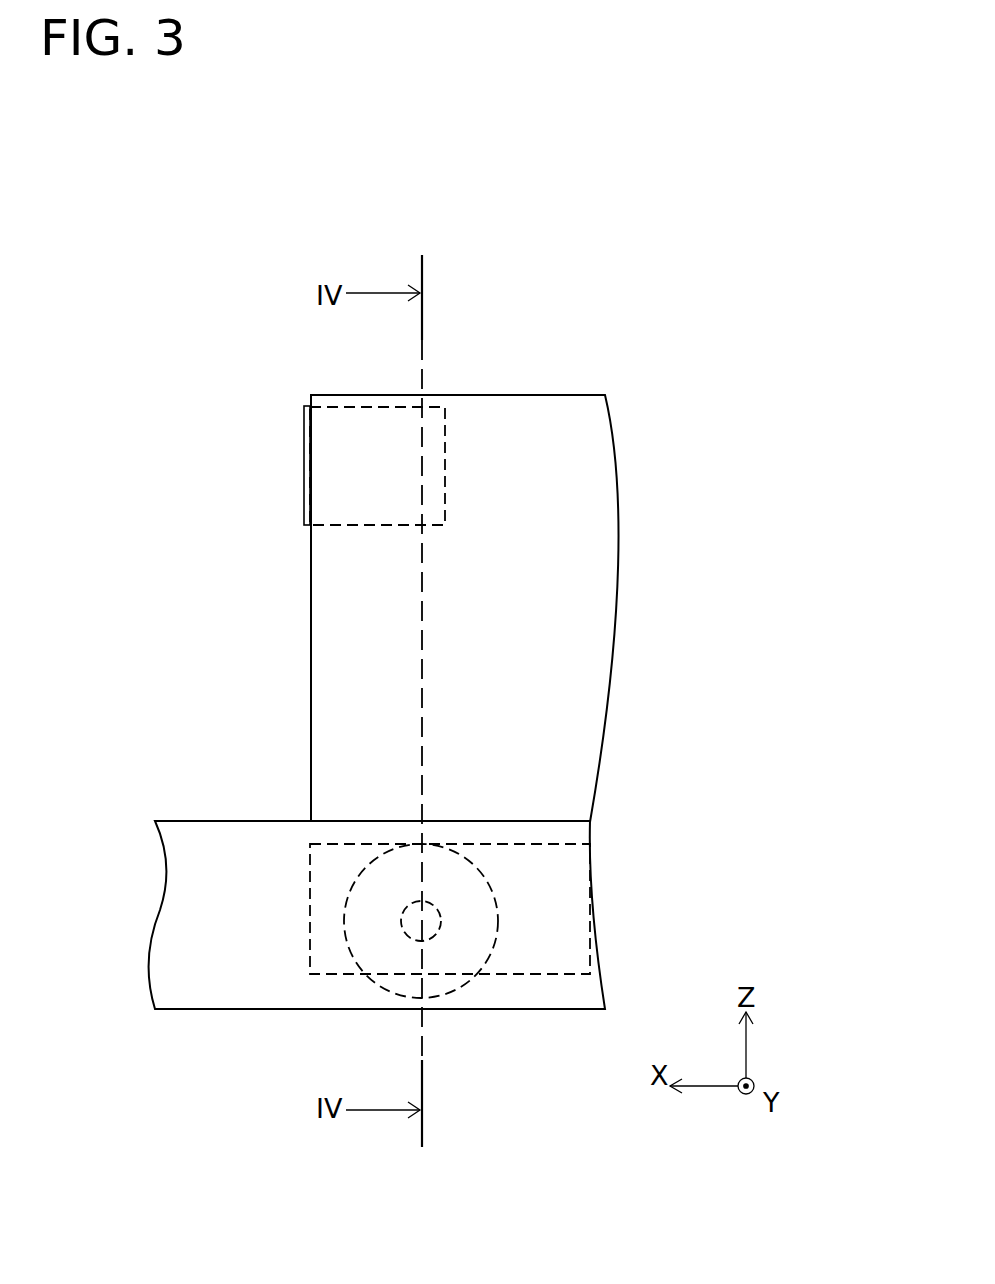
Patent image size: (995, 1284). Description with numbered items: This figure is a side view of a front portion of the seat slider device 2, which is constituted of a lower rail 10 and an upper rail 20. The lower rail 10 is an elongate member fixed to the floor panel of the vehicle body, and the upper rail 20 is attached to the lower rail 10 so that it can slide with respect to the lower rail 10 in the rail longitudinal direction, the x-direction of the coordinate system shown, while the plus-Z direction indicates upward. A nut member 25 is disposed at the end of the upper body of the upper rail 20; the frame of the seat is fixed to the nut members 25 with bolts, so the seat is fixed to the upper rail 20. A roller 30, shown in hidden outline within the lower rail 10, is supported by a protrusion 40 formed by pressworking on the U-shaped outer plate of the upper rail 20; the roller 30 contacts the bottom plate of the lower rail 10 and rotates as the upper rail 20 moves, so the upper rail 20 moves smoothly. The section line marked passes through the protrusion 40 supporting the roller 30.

The seat slider device 2 is at (177, 467).
The lower rail 10 is at (200, 827).
The upper rail 20 is at (545, 400).
The nut member 25 is at (302, 425).
The roller 30 is at (393, 987).
The protrusion 40 is at (433, 930).